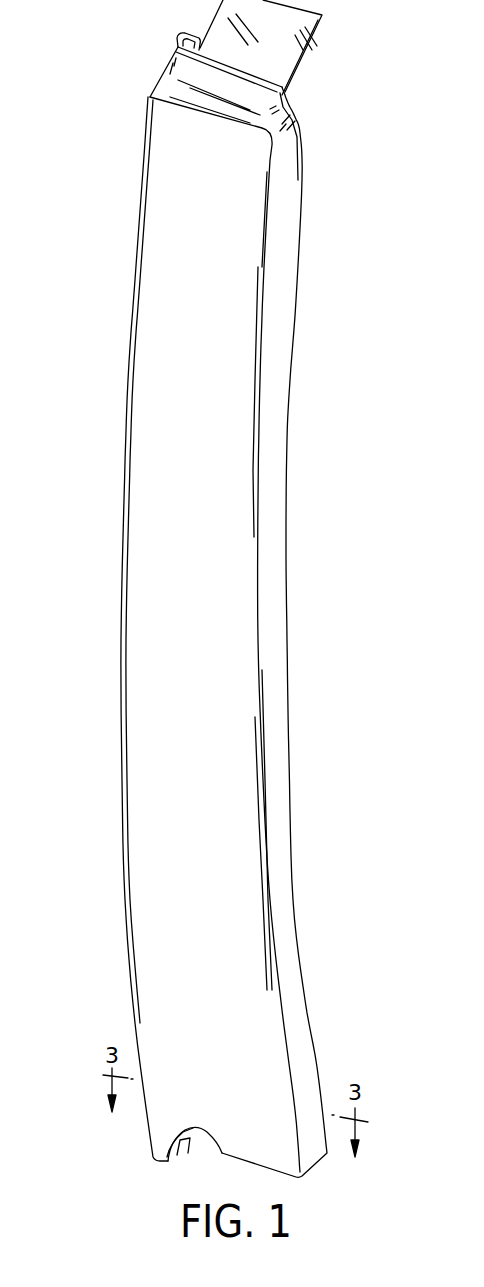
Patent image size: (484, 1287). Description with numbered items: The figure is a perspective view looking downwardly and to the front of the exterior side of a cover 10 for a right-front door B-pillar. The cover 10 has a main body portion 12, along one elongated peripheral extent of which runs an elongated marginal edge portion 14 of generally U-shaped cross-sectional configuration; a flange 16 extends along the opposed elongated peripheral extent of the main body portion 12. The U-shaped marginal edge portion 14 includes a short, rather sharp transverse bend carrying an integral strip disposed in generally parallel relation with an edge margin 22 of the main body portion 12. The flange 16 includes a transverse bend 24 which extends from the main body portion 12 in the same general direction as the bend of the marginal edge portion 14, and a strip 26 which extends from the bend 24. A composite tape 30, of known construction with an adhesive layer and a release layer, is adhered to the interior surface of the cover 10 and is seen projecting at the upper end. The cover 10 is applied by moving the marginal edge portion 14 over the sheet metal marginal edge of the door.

The cover 10 is at (233, 588).
The main body portion 12 is at (148, 748).
The marginal edge portion 14 is at (123, 918).
The flange 16 is at (287, 852).
The edge margin 22 is at (132, 588).
The transverse bend 24 is at (262, 388).
The strip 26 is at (278, 617).
The composite tape 30 is at (322, 19).